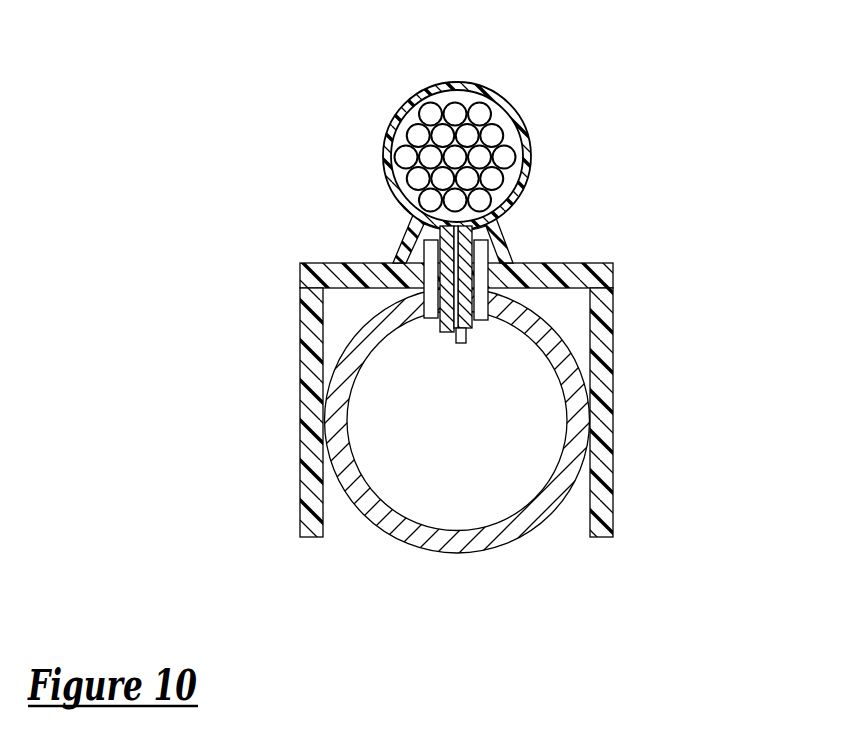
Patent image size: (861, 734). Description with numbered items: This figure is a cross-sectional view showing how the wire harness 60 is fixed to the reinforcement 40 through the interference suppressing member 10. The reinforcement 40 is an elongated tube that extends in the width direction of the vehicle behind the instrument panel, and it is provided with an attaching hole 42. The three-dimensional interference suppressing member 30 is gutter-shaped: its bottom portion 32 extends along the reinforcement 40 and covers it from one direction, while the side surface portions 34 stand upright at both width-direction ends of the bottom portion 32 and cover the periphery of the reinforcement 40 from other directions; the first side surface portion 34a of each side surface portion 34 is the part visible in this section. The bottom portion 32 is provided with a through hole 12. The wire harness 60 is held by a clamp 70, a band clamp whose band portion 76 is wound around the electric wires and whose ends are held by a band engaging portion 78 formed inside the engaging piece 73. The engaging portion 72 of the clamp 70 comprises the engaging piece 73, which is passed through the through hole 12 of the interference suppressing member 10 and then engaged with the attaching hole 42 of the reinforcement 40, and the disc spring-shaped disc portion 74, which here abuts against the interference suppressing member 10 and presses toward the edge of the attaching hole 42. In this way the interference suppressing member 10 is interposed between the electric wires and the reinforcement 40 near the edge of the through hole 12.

The interference suppressing member 10 is at (458, 371).
The through hole 12 is at (453, 145).
The three-dimensional interference suppressing member 30 is at (458, 371).
The bottom portion 32 is at (581, 270).
The side surface portions 34 is at (458, 412).
The first side surface portion 34a is at (307, 472).
The reinforcement 40 is at (509, 554).
The attaching hole 42 is at (476, 322).
The wire harness 60 is at (504, 138).
The clamp 70 is at (511, 233).
The engaging portion 72 is at (385, 294).
The engaging piece 73 is at (437, 322).
The disc portion 74 is at (438, 258).
The band portion 76 is at (467, 86).
The band engaging portion 78 is at (460, 344).